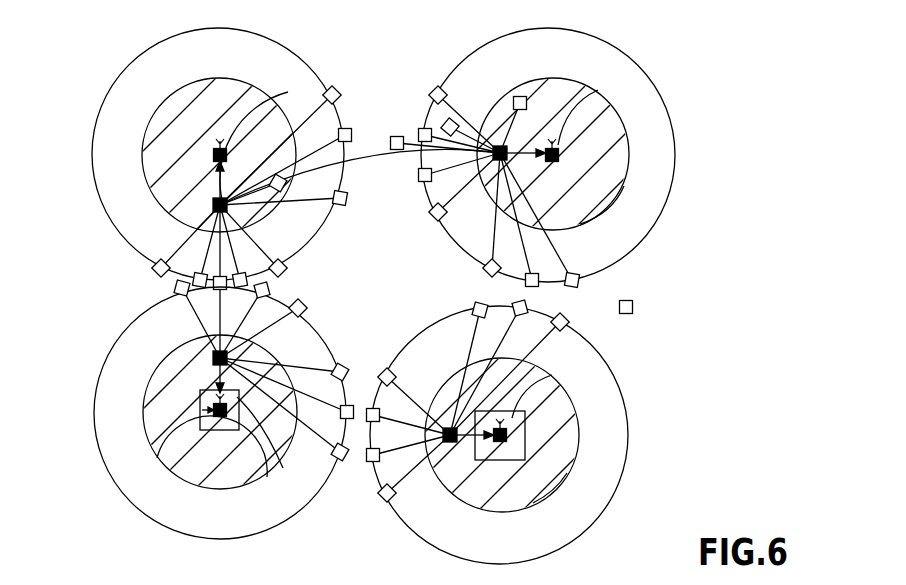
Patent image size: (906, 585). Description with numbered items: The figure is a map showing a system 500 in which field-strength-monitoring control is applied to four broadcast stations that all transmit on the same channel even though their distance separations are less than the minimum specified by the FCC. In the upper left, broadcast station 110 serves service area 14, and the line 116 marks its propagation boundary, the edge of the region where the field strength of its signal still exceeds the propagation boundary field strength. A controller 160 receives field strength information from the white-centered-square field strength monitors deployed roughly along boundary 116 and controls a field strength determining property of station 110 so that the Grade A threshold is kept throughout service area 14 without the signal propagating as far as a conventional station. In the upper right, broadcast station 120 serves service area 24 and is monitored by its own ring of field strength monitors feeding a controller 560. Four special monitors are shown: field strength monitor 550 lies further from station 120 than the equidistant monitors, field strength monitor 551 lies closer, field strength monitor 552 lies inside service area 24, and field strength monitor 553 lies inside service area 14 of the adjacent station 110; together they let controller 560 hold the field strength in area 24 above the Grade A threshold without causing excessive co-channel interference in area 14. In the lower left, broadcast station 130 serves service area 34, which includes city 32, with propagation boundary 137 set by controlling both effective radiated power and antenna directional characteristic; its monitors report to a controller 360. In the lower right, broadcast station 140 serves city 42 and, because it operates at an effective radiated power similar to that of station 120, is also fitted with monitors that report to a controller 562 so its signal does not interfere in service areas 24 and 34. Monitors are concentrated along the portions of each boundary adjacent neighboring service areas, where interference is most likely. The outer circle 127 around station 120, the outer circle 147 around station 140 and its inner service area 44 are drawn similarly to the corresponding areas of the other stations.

The system 500 is at (371, 546).
The propagation boundary 116 is at (114, 84).
The service area 14 is at (166, 102).
The broadcast station 110 is at (266, 95).
The controller 160 is at (230, 210).
The field strength monitor 550 is at (397, 136).
The field strength monitor 553 is at (343, 172).
The second cell coverage area 127 is at (477, 52).
The service area 24 is at (580, 82).
The broadcast station 120 is at (603, 107).
The field strength monitor 551 is at (423, 129).
The field strength monitor 552 is at (520, 96).
The controller 560 is at (456, 123).
The propagation boundary 137 is at (96, 420).
The service area 34 is at (150, 381).
The controller 360 is at (212, 357).
The city 32 is at (160, 457).
The broadcast station 130 is at (259, 470).
The fourth cell coverage area 147 is at (432, 325).
The fourth base station service area 44 is at (448, 378).
The broadcast station 140 is at (551, 379).
The city 42 is at (527, 454).
The controller 562 is at (433, 480).